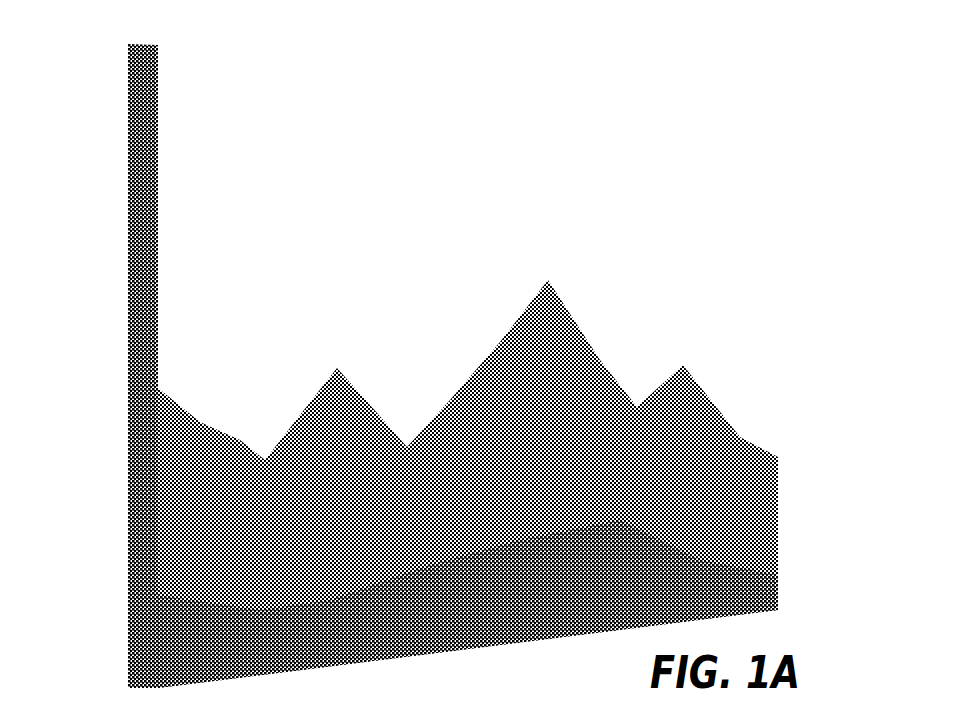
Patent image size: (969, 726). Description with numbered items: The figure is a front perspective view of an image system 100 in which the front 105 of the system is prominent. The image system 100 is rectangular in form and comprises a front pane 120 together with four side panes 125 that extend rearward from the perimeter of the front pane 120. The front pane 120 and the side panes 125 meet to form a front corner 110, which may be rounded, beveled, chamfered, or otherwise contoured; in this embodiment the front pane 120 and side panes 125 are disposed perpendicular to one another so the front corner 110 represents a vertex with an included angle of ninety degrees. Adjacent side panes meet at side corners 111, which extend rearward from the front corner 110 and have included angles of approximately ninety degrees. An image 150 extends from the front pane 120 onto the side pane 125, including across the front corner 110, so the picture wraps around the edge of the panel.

The image system 100 is at (451, 371).
The front 105 is at (363, 206).
The front corner 110 is at (150, 213).
The side corner 111 is at (142, 59).
The front pane 120 is at (623, 206).
The side pane 125 is at (137, 332).
The image 150 is at (575, 400).